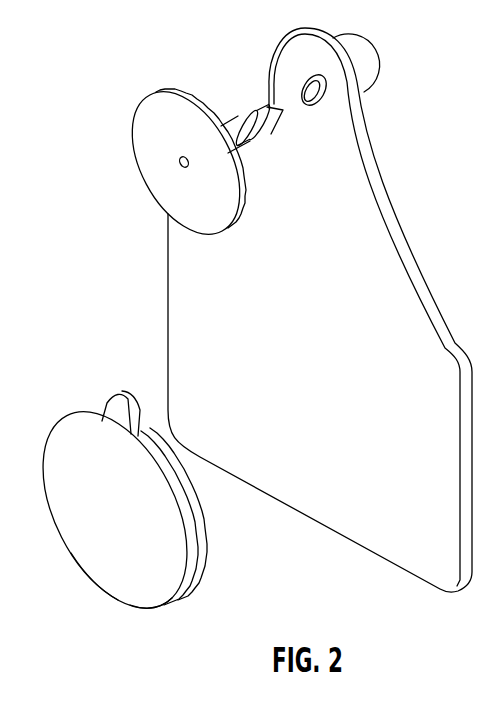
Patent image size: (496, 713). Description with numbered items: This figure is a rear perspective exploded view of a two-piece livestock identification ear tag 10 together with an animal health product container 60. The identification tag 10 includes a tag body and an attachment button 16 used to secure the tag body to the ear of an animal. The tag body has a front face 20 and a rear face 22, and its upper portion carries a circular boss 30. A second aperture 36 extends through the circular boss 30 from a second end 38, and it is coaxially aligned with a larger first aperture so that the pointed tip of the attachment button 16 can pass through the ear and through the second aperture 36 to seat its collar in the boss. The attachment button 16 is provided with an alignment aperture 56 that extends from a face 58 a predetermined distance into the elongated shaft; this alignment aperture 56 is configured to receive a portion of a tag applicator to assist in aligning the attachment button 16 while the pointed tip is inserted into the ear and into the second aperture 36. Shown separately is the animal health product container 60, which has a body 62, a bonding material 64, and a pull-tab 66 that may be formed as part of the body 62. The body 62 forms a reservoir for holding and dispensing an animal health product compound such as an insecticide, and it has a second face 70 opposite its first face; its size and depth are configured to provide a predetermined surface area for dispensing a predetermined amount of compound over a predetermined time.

The two-piece livestock identification ear tag 10 is at (205, 39).
The attachment button 16 is at (133, 160).
The front face 20 is at (410, 255).
The rear face 22 is at (168, 326).
The circular boss 30 is at (391, 78).
The second aperture 36 is at (312, 107).
The second end 38 is at (305, 77).
The alignment aperture 56 is at (181, 170).
The face 58 is at (133, 122).
The animal health product container 60 is at (43, 486).
The body 62 is at (83, 569).
The bonding material 64 is at (205, 537).
The pull-tab 66 is at (112, 392).
The second face 70 is at (127, 583).